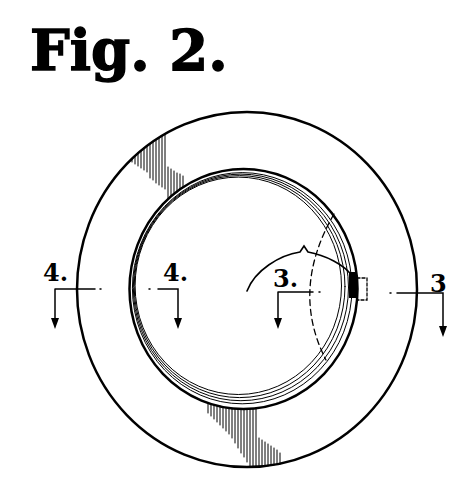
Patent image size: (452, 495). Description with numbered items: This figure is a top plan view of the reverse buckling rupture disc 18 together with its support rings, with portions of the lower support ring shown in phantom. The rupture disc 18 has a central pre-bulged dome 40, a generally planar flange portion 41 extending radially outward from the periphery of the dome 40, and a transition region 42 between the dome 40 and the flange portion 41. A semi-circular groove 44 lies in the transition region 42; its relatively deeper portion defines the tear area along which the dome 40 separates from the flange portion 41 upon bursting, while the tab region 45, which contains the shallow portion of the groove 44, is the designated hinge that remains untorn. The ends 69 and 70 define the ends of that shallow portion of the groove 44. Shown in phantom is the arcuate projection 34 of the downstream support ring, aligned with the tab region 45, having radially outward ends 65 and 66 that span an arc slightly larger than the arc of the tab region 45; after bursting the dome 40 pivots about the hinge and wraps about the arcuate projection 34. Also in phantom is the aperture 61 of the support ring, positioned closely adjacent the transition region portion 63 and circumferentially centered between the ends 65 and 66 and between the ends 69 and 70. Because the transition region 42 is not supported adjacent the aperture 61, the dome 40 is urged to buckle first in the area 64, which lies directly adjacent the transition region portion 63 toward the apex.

The reverse buckling rupture disc 18 is at (163, 133).
The flange portion 41 is at (344, 153).
The transition region 42 is at (358, 253).
The semi-circular groove 44 is at (206, 402).
The central pre-bulged dome 40 is at (257, 250).
The buckling area 64 is at (299, 259).
The radially outward end of arcuate projection 66 is at (327, 221).
The end of shallow groove portion 70 is at (333, 216).
The transition region portion 63 is at (362, 278).
The aperture 61 is at (366, 298).
The tab region 45 is at (357, 322).
The end of shallow groove portion 69 is at (332, 368).
The radially outward end of arcuate projection 65 is at (320, 381).
The arcuate projection 34 is at (312, 353).